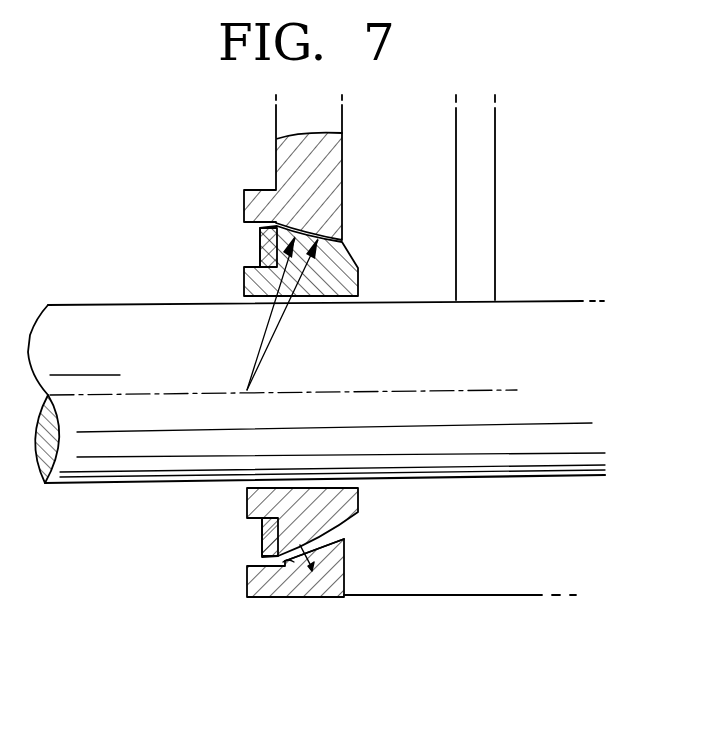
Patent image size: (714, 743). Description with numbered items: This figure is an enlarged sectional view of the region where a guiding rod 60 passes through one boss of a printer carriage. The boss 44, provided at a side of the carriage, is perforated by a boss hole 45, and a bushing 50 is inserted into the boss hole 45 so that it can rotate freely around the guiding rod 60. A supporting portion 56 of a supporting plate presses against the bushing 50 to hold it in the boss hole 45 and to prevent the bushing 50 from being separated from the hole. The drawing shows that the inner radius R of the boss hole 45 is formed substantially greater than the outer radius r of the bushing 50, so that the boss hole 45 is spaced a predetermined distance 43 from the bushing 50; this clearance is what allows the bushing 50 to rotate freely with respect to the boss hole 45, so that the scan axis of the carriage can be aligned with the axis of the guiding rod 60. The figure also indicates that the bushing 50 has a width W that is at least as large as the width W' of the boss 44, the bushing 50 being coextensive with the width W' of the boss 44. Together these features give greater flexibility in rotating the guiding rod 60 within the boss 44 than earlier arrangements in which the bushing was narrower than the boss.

The supporting portion 56 is at (260, 242).
The guiding rod 60 is at (552, 452).
The bushing 50 is at (252, 505).
The predetermined distance 43 is at (283, 560).
The boss 44 is at (272, 583).
The boss hole 45 is at (290, 575).
The outer radius of the bushing r is at (263, 332).
The inner radius of the boss hole R is at (283, 318).
The width of the bushing W is at (286, 505).
The width of the boss W' is at (314, 580).